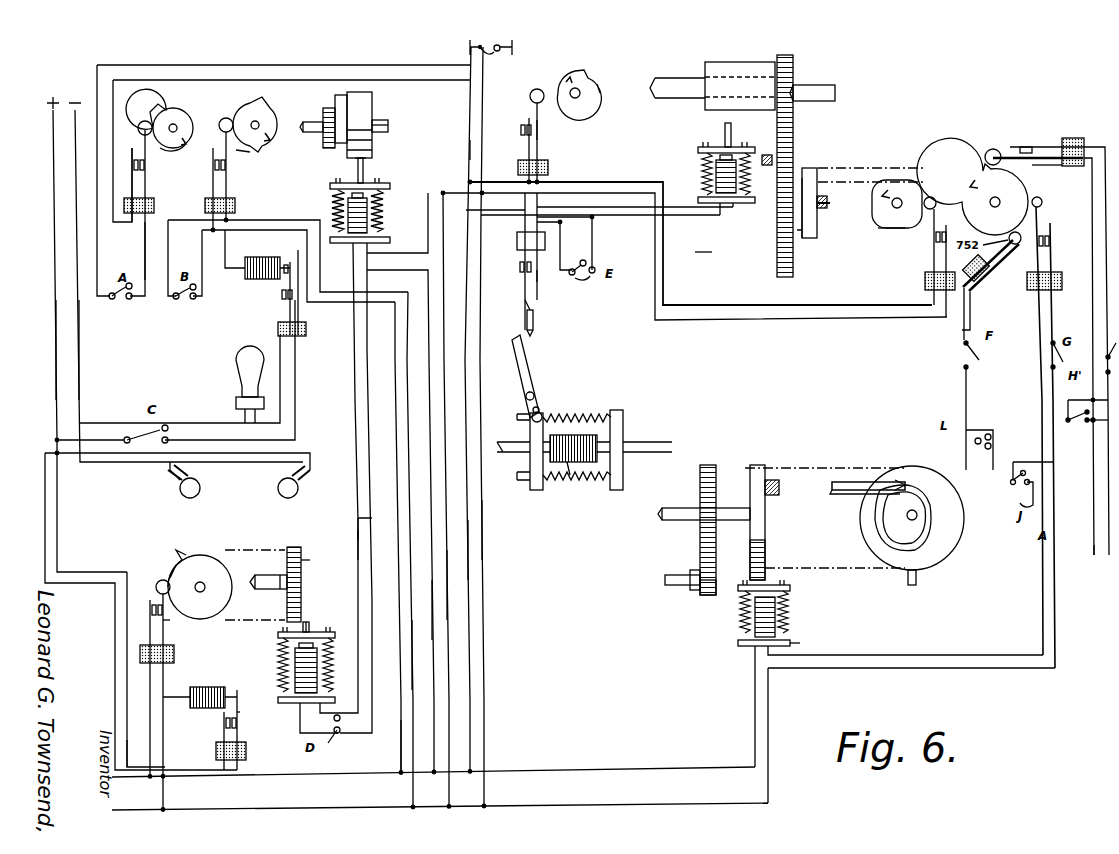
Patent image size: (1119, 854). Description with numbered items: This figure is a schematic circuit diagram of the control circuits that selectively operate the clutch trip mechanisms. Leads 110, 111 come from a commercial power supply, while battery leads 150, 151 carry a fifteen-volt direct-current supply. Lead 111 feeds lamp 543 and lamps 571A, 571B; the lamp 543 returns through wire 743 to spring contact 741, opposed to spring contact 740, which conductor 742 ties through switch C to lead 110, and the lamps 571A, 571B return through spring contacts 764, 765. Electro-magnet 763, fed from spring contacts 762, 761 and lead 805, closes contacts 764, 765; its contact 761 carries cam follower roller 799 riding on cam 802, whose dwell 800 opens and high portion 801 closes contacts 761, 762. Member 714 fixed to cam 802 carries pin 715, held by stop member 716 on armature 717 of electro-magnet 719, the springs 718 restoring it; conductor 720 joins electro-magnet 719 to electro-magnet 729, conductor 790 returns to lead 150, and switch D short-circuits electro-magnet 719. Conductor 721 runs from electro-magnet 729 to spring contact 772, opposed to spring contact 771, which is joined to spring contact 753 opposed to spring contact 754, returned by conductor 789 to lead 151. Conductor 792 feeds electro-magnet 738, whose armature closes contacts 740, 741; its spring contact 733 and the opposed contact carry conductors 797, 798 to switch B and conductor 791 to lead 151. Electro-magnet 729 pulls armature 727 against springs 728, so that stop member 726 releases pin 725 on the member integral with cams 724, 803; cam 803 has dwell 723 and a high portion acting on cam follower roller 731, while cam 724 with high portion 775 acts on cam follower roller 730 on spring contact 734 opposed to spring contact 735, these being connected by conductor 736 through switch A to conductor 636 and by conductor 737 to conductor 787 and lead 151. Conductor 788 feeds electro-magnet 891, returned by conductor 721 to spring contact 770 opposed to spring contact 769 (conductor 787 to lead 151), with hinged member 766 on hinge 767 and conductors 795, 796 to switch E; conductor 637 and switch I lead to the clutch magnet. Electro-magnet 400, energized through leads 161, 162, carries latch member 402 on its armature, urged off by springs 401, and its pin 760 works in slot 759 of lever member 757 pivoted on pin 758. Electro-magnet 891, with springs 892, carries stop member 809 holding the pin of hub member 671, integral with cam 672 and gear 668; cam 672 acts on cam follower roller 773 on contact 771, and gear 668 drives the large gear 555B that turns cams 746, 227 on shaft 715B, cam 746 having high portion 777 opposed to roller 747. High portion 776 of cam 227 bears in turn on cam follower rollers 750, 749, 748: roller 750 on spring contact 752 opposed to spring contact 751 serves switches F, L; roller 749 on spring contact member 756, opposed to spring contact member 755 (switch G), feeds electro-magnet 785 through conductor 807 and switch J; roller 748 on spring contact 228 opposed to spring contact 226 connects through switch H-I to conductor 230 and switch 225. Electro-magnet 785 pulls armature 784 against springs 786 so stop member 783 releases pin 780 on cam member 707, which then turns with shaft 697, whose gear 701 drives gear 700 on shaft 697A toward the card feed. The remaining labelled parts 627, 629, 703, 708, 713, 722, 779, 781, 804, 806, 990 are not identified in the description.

The lead 110 is at (56, 340).
The lead 111 is at (79, 340).
The battery lead 150 is at (562, 762).
The battery lead 151 is at (562, 797).
The lead 161 is at (655, 452).
The lead 162 is at (645, 440).
The switch 225 is at (1018, 549).
The spring contact 226 is at (1040, 147).
The cam 227 is at (812, 168).
The spring contact 228 is at (1038, 175).
The conductor 230 is at (1098, 560).
The electro-magnet 400 is at (567, 490).
The springs 401 is at (607, 415).
The latch member 402 is at (515, 436).
The lamp 543 is at (236, 372).
The conductor 555B is at (720, 255).
The lamp 571A is at (195, 488).
The lamp 571B is at (285, 498).
The shaft 627 is at (838, 87).
The shaft 629 is at (385, 115).
The conductor 636 is at (462, 51).
The conductor 637 is at (470, 151).
The gear 668 is at (793, 63).
The hub member 671 is at (575, 73).
The cam 672 is at (598, 84).
The shaft 697 is at (660, 520).
The shaft 697A is at (665, 580).
The gear 700 is at (700, 595).
The gear 701 is at (706, 465).
The pawl 703 is at (780, 473).
The cam member 707 is at (765, 470).
The arm 708 is at (858, 475).
The solenoid core 713 is at (282, 662).
The member 714 is at (301, 557).
The pin 715 is at (310, 615).
The stop 715B is at (828, 200).
The stop member 716 is at (312, 626).
The armature 717 is at (280, 635).
The springs 718 is at (322, 680).
The electro-magnet 719 is at (330, 655).
The conductor 720 is at (358, 540).
The conductor 721 is at (445, 181).
The solenoid core 722 is at (368, 207).
The dwell 723 is at (258, 100).
The cam 724 is at (180, 148).
The pin 725 is at (365, 162).
The stop member 726 is at (368, 174).
The armature 727 is at (390, 188).
The springs 728 is at (333, 199).
The electro-magnet 729 is at (370, 229).
The cam follower roller 730 is at (143, 120).
The cam follower roller 731 is at (226, 117).
The spring contact 733 is at (156, 199).
The spring contact 734 is at (148, 178).
The spring contact 735 is at (132, 157).
The conductor 736 is at (145, 245).
The conductor 737 is at (470, 148).
The electro-magnet 738 is at (258, 257).
The spring contact 740 is at (300, 267).
The spring contact 741 is at (280, 294).
The conductor 742 is at (296, 373).
The wire 743 is at (282, 405).
The cam 746 is at (900, 178).
The roller 747 is at (925, 225).
The cam follower roller 748 is at (998, 150).
The cam follower roller 749 is at (1043, 202).
The cam follower roller 750 is at (300, 319).
The spring contact 751 is at (977, 297).
The spring contact 752 is at (232, 178).
The spring contact 753 is at (935, 245).
The spring contact 754 is at (925, 278).
The spring contact member 755 is at (1051, 240).
The spring contact member 756 is at (800, 160).
The lever member 757 is at (528, 355).
The pin 758 is at (535, 392).
The slot 759 is at (540, 408).
The pin 760 is at (543, 415).
The spring contact 761 is at (170, 618).
The spring contact 762 is at (148, 609).
The electro-magnet 763 is at (207, 687).
The spring contact 764 is at (240, 718).
The spring contact 765 is at (222, 716).
The hinged member 766 is at (533, 323).
The hinge 767 is at (522, 300).
The spring contact 769 is at (520, 267).
The spring contact 770 is at (537, 280).
The spring contact 771 is at (545, 128).
The spring contact 772 is at (528, 122).
The cam follower roller 773 is at (255, 155).
The high portion 775 is at (166, 108).
The high portion 776 is at (985, 158).
The high portion 777 is at (880, 230).
The cam disc 779 is at (930, 519).
The pin 780 is at (920, 575).
The pin 781 is at (910, 475).
The stop member 783 is at (788, 575).
The armature 784 is at (785, 590).
The electro-magnet 785 is at (742, 640).
The springs 786 is at (790, 618).
The conductor 787 is at (483, 531).
The conductor 788 is at (468, 553).
The conductor 789 is at (447, 585).
The conductor 790 is at (432, 608).
The conductor 791 is at (412, 658).
The conductor 792 is at (401, 758).
The conductor 795 is at (560, 235).
The conductor 796 is at (592, 248).
The conductor 797 is at (200, 228).
The conductor 798 is at (200, 250).
The cam follower roller 799 is at (156, 582).
The dwell 800 is at (175, 565).
The high portion 801 is at (198, 555).
The cam 802 is at (285, 548).
The cam 803 is at (350, 92).
The shaft 804 is at (323, 107).
The lead 805 is at (240, 698).
The conductor 806 is at (130, 753).
The conductor 807 is at (816, 644).
The stop member 809 is at (700, 143).
The electro-magnet 891 is at (700, 159).
The springs 892 is at (700, 168).
The rod 990 is at (740, 145).